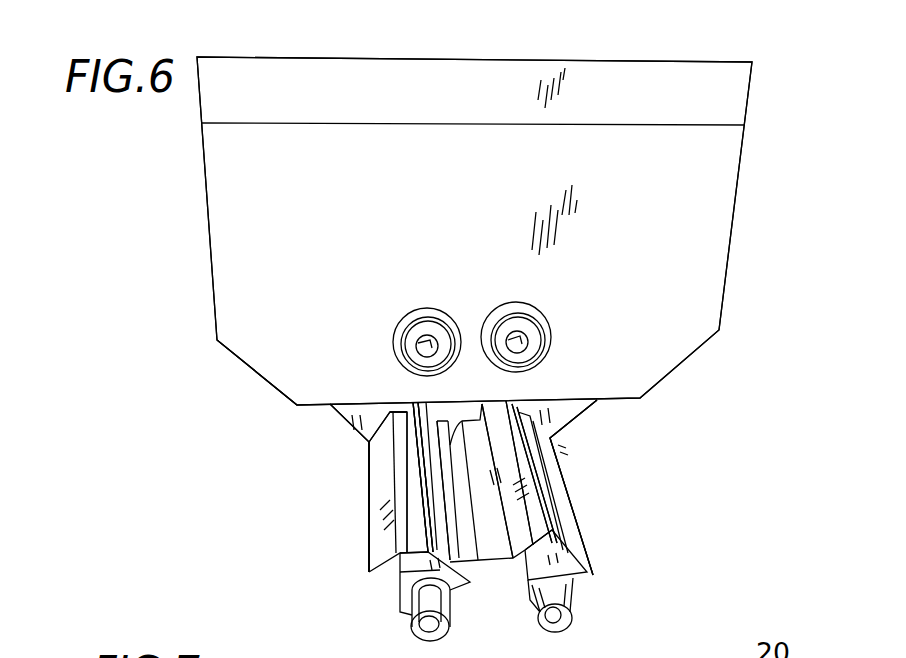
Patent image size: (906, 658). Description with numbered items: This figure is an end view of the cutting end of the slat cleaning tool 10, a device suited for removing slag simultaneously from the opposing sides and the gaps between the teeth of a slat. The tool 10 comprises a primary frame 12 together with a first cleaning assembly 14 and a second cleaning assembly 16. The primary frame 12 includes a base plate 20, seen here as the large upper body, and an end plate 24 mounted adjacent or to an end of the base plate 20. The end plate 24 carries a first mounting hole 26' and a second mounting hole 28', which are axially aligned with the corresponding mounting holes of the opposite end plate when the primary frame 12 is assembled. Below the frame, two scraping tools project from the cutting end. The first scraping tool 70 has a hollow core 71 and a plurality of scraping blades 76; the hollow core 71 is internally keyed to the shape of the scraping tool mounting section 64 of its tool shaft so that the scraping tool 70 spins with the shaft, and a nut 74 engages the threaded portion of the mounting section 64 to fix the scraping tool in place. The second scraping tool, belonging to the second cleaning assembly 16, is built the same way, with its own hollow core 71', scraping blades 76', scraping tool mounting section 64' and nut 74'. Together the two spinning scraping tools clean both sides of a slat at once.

The tool 10 is at (190, 207).
The primary frame 12 is at (737, 268).
The first cleaning assembly 14 is at (330, 548).
The second cleaning assembly 16 is at (632, 510).
The base plate 20 is at (677, 100).
The end plate 24 is at (226, 254).
The first mounting hole 26' is at (394, 314).
The second mounting hole 28' is at (563, 337).
The scraping tool 70 is at (352, 522).
The hollow core 71 is at (366, 477).
The nut 74 is at (385, 585).
The scraping blades 76 is at (347, 492).
The scraping tool mounting section 64 is at (392, 616).
The hollow core 71' is at (586, 473).
The nut 74' is at (610, 575).
The scraping blades 76' is at (531, 487).
The scraping tool mounting section 64' is at (593, 616).